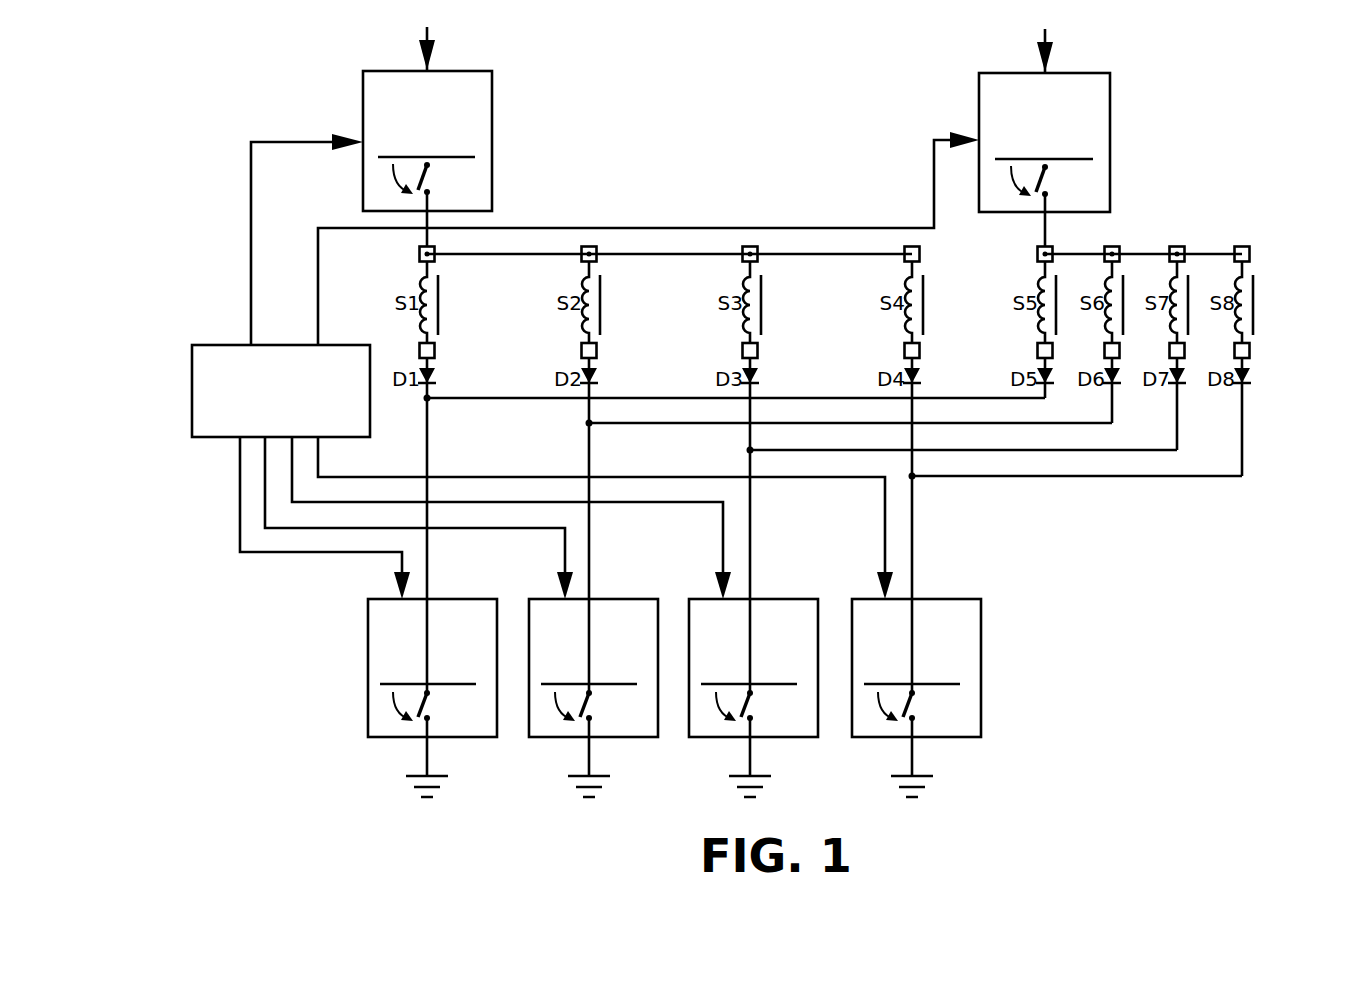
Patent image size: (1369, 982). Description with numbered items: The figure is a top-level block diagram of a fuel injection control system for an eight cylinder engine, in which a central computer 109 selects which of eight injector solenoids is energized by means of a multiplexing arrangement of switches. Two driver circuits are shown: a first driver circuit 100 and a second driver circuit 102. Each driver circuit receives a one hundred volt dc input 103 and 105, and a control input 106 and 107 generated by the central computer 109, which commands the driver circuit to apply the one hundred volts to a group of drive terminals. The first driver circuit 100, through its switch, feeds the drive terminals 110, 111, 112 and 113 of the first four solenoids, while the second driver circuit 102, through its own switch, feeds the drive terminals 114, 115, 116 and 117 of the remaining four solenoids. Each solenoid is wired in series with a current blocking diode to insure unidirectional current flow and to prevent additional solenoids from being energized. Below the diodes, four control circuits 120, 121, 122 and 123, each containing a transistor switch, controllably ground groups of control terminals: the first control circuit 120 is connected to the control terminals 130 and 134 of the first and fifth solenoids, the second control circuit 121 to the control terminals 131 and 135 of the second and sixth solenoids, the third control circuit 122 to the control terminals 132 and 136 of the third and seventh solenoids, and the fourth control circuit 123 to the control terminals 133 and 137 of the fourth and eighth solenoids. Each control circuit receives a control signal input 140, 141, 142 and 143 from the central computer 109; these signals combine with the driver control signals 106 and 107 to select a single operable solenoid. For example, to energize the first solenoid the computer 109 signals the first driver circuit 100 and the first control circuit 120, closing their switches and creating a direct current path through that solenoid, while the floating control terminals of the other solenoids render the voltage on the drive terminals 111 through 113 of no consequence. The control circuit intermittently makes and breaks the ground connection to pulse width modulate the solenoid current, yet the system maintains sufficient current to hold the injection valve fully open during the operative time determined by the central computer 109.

The driver circuit #1 100 is at (492, 143).
The driver circuit #2 102 is at (1110, 143).
The one hundred volt dc input 103 is at (433, 48).
The one hundred volt dc input 105 is at (1051, 50).
The control input 106 is at (312, 140).
The control input 107 is at (934, 138).
The central computer 109 is at (202, 345).
The drive terminal 110 is at (436, 248).
The drive terminal 111 is at (598, 248).
The drive terminal 112 is at (759, 248).
The drive terminal 113 is at (910, 246).
The drive terminal 114 is at (1054, 248).
The drive terminal 115 is at (1120, 248).
The drive terminal 116 is at (1185, 248).
The drive terminal 117 is at (1250, 248).
The control circuit #1 120 is at (380, 738).
The control circuit #2 121 is at (542, 738).
The control circuit #3 122 is at (702, 738).
The control circuit #4 123 is at (864, 738).
The control terminal 130 is at (436, 343).
The control terminal 131 is at (598, 343).
The control terminal 132 is at (760, 343).
The control terminal 133 is at (920, 343).
The control terminal 134 is at (1053, 358).
The control terminal 135 is at (1120, 358).
The control terminal 136 is at (1185, 358).
The control terminal 137 is at (1250, 358).
The control signal input 140 is at (240, 455).
The control signal input 141 is at (265, 475).
The control signal input 142 is at (310, 502).
The control signal input 143 is at (345, 478).